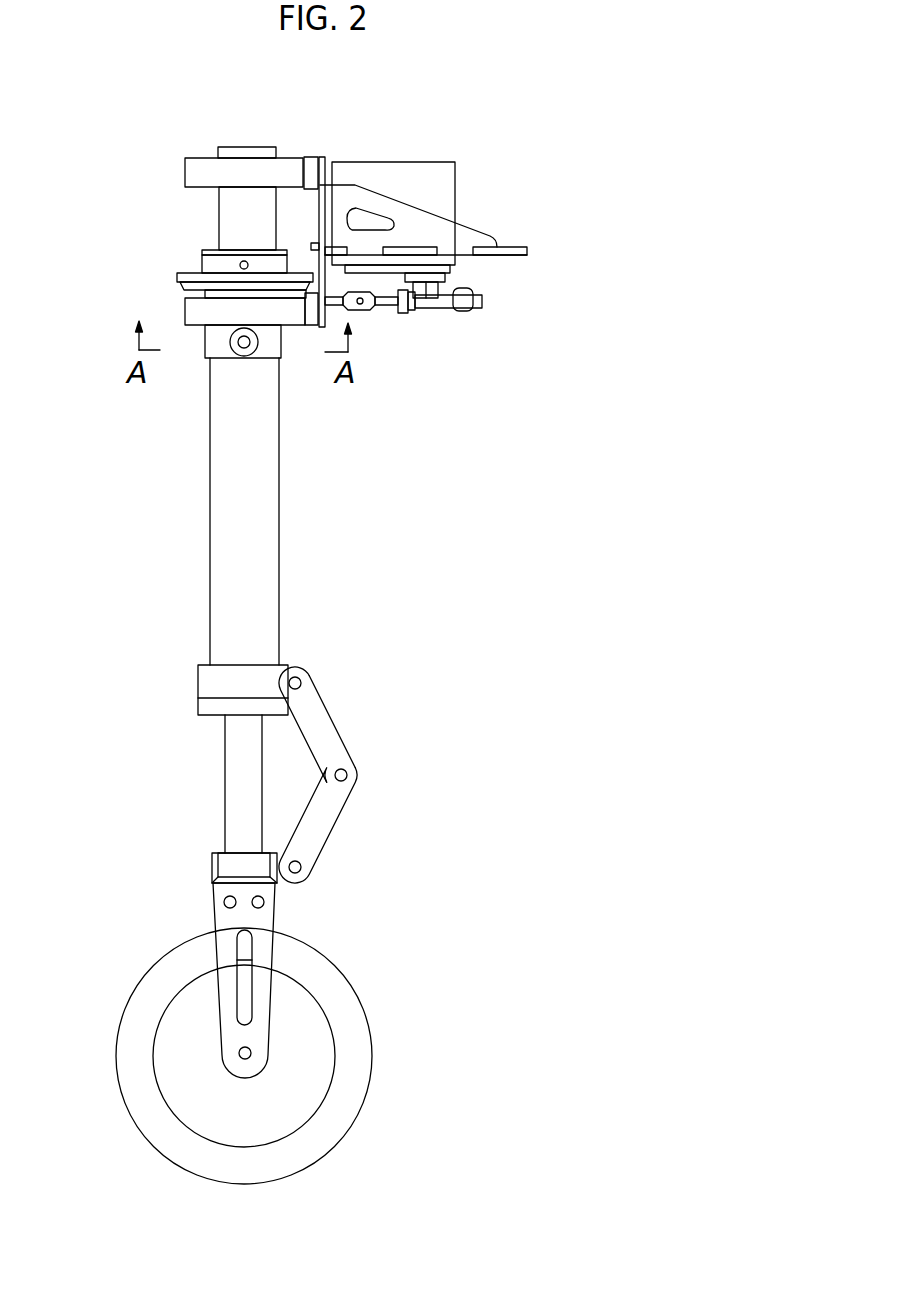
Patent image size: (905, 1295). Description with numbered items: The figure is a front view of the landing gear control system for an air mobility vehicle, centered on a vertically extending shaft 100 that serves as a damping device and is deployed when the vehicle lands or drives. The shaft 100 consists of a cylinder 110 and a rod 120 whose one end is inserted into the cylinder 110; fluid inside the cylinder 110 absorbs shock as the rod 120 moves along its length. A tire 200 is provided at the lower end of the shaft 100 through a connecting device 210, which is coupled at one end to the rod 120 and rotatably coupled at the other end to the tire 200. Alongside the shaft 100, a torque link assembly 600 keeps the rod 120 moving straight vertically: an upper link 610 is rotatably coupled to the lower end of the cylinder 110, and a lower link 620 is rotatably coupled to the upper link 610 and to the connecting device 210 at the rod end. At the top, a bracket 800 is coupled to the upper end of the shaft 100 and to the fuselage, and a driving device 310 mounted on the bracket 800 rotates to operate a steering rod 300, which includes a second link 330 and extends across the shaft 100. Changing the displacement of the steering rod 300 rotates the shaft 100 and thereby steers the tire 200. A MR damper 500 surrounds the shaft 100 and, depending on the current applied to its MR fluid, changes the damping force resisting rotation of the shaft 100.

The shaft 100 is at (265, 620).
The cylinder 110 is at (268, 590).
The rod 120 is at (242, 777).
The tire 200 is at (360, 1050).
The connecting device 210 is at (267, 913).
The steering rod 300 is at (447, 326).
The driving device 310 is at (397, 172).
The second link 330 is at (387, 300).
The MR damper 500 is at (192, 311).
The torque link assembly 600 is at (393, 770).
The upper link 610 is at (327, 720).
The lower link 620 is at (337, 828).
The bracket 800 is at (423, 228).